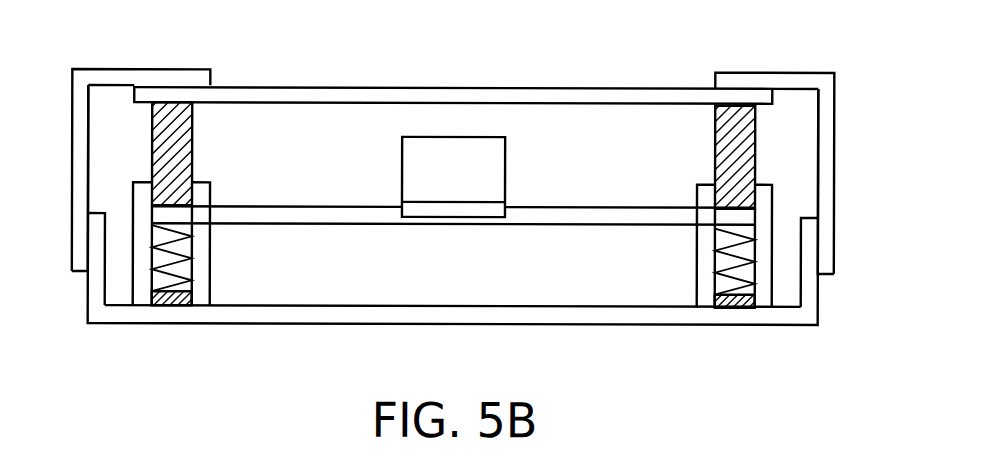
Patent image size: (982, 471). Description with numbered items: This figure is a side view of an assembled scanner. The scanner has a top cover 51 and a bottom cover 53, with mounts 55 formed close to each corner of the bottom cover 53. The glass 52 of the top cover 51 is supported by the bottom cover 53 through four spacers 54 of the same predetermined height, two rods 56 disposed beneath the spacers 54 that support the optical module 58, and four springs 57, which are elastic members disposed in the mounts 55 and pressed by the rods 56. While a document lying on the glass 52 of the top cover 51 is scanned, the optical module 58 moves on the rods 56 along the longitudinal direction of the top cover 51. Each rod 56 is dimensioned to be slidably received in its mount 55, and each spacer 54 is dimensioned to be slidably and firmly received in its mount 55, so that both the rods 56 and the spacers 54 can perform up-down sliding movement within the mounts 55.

The top cover 51 is at (122, 57).
The glass 52 is at (535, 91).
The bottom cover 53 is at (623, 326).
The spacer 54 is at (182, 128).
The mount 55 is at (142, 282).
The rod 56 is at (325, 213).
The spring 57 is at (165, 299).
The optical module 58 is at (430, 155).